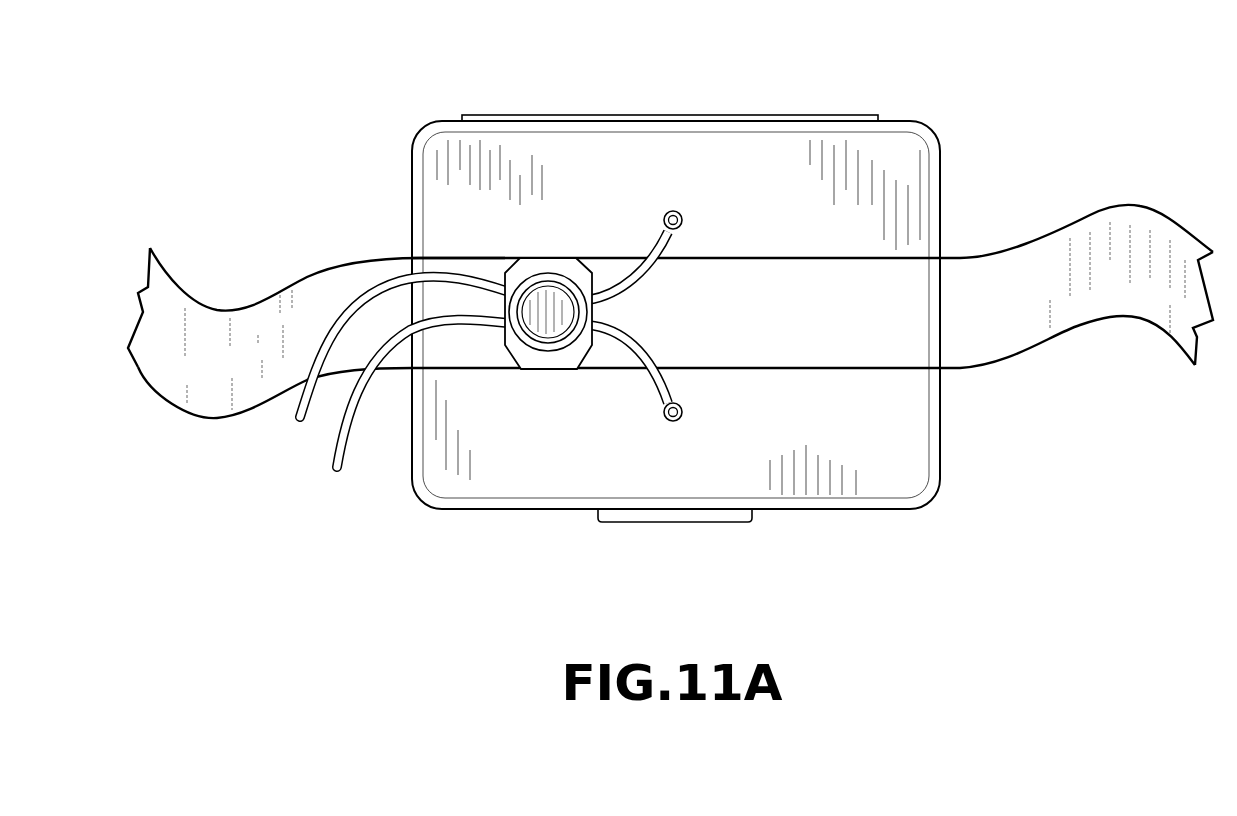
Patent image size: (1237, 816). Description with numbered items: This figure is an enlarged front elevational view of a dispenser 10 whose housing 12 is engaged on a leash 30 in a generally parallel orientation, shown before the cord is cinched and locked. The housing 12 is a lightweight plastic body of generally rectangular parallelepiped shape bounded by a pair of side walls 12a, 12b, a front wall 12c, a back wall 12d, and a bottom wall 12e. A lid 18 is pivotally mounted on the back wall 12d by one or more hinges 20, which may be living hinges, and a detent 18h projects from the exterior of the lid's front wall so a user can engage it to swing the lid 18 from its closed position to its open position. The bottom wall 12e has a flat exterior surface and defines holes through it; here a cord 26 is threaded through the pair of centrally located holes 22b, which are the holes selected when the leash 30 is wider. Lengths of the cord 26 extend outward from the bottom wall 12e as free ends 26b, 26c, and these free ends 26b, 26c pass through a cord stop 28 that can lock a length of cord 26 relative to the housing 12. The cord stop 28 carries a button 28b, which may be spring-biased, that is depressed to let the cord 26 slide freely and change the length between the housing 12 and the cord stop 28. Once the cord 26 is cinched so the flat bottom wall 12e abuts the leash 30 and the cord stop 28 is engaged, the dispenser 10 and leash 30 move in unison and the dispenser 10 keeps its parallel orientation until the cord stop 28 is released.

The dispenser 10 is at (343, 58).
The housing 12 is at (670, 315).
The side wall 12a is at (945, 205).
The side wall 12b is at (410, 228).
The front wall 12c is at (875, 512).
The back wall 12d is at (930, 120).
The bottom wall 12e is at (797, 210).
The lid 18 is at (515, 150).
The detent 18h is at (740, 524).
The hinge 20 is at (804, 115).
The hole 22b is at (668, 212).
The cord 26 is at (493, 345).
The free end 26b is at (340, 450).
The free end 26c is at (296, 412).
The cord stop 28 is at (547, 322).
The button 28b is at (560, 297).
The leash 30 is at (1136, 205).